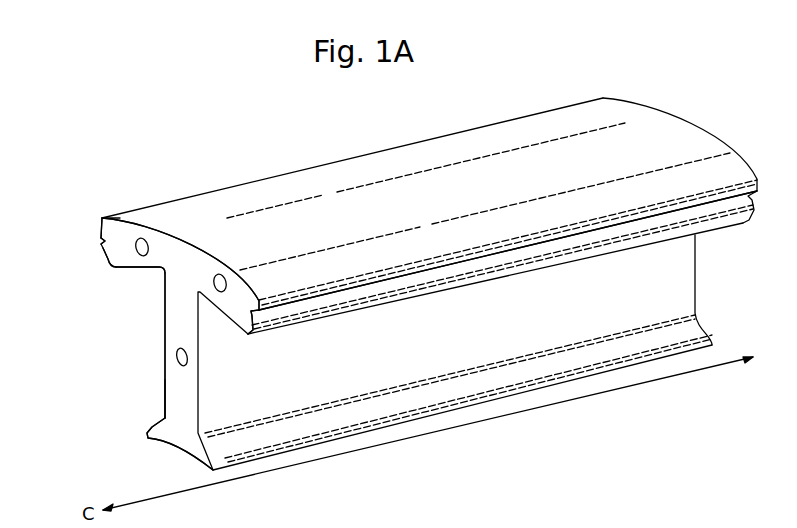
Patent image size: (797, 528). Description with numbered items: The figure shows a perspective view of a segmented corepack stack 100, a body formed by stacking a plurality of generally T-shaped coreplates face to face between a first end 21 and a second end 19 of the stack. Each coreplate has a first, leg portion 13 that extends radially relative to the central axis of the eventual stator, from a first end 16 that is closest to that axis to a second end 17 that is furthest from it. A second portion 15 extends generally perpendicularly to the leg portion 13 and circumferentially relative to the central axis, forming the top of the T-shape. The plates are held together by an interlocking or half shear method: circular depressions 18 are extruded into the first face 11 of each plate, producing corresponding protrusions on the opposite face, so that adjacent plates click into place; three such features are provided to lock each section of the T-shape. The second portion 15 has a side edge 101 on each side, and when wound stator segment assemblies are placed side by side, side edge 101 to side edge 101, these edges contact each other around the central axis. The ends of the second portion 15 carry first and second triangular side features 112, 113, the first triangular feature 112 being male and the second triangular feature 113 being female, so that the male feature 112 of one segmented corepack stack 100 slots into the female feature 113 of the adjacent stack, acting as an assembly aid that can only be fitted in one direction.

The segmented corepack stack 100 is at (222, 108).
The second end 19 is at (684, 119).
The second end of leg portion 17 is at (207, 250).
The circular depressions 18 is at (142, 238).
The first end 21 is at (100, 220).
The first triangular side feature 112 is at (102, 243).
The side edge 101 is at (106, 258).
The second portion 15 is at (150, 275).
The first face 11 is at (165, 343).
The leg portion 13 is at (168, 407).
The first end of leg portion 16 is at (180, 448).
The second triangular side feature 113 is at (253, 325).